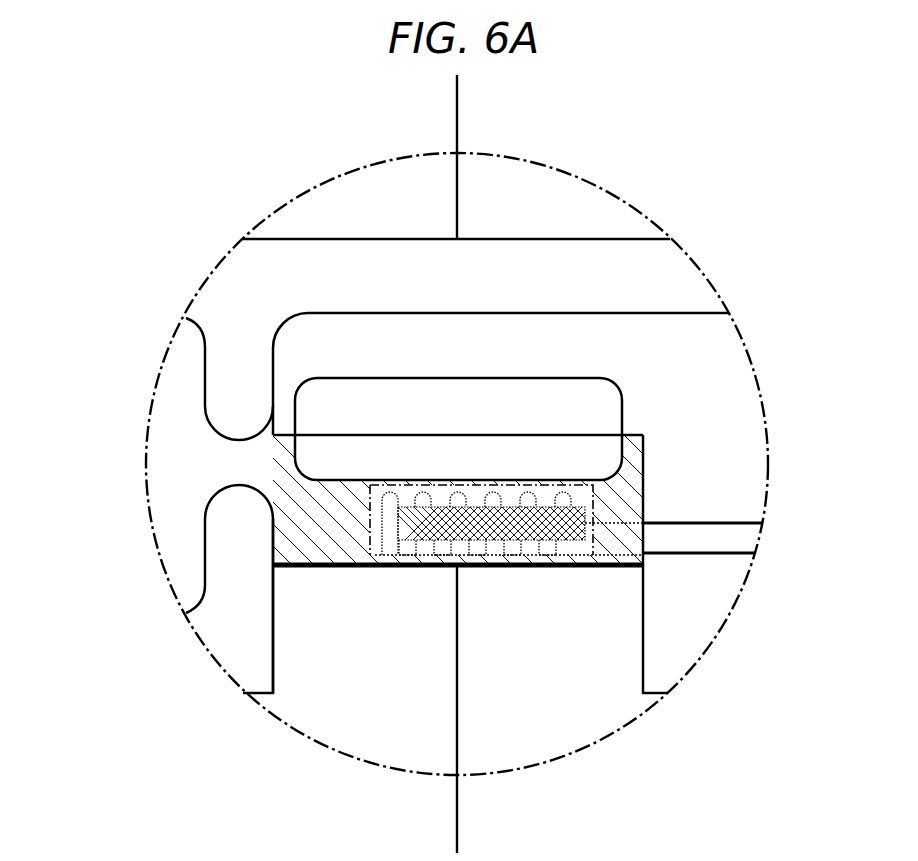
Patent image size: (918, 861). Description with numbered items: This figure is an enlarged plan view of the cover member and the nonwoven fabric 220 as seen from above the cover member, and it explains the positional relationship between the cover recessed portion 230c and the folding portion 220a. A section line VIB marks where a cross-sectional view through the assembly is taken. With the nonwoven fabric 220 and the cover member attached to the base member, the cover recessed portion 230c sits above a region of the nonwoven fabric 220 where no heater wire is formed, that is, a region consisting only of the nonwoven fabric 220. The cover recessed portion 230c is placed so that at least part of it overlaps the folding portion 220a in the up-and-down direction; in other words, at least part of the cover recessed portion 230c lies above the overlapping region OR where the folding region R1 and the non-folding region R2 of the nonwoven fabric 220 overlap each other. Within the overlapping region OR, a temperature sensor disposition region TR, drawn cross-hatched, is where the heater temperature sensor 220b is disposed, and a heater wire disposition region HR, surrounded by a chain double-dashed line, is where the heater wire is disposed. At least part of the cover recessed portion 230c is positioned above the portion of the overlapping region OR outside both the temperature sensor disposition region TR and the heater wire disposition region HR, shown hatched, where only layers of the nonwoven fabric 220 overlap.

The nonwoven fabric 220 is at (470, 253).
The folding portion 220a is at (652, 440).
The heater temperature sensor 220b is at (588, 501).
The cover recessed portion 230c is at (610, 379).
The overlapping region OR is at (643, 508).
The folding region R1 is at (643, 517).
The non-folding region R2 is at (643, 541).
The temperature sensor disposition region TR is at (565, 550).
The heater wire disposition region HR is at (535, 572).
The section line VIB- VIB is at (464, 92).